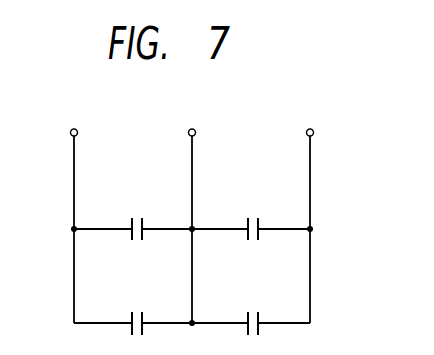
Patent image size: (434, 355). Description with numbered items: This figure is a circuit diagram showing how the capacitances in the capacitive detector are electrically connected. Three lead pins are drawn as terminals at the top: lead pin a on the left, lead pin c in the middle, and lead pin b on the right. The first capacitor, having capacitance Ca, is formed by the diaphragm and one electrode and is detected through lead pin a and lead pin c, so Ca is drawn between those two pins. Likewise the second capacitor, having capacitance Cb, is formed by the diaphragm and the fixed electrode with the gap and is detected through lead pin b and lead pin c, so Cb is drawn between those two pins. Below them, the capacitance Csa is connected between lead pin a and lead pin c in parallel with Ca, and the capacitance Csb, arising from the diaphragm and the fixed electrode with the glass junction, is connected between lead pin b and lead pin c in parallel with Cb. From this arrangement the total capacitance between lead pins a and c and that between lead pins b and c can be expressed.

The lead pin a is at (73, 164).
The lead pin b is at (309, 164).
The lead pin c is at (192, 211).
The capacitance of first capacitor Ca is at (137, 213).
The capacitance of second capacitor Cb is at (253, 213).
The capacitance Csa is at (140, 308).
The capacitance Csb is at (256, 308).